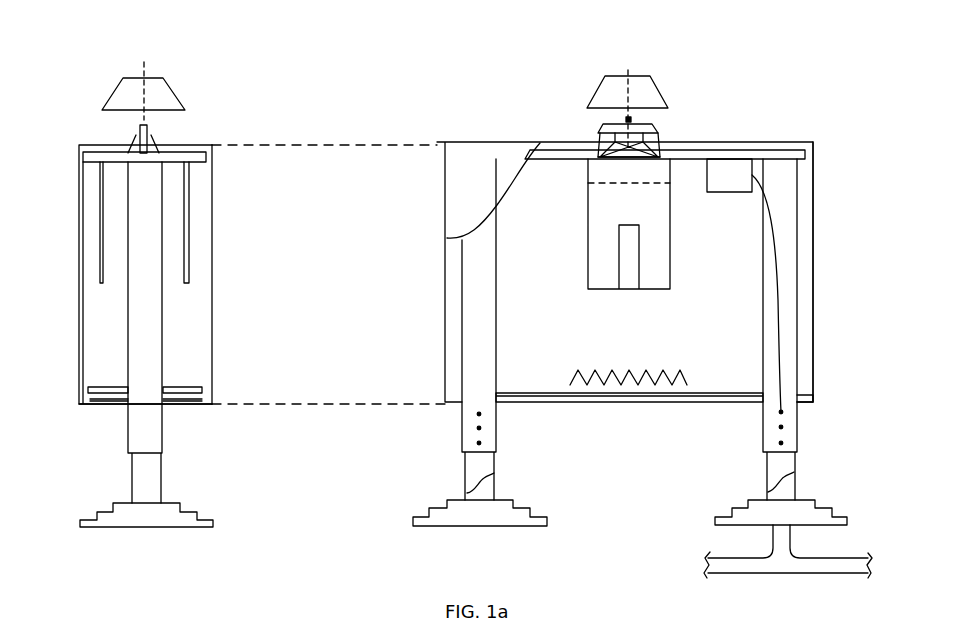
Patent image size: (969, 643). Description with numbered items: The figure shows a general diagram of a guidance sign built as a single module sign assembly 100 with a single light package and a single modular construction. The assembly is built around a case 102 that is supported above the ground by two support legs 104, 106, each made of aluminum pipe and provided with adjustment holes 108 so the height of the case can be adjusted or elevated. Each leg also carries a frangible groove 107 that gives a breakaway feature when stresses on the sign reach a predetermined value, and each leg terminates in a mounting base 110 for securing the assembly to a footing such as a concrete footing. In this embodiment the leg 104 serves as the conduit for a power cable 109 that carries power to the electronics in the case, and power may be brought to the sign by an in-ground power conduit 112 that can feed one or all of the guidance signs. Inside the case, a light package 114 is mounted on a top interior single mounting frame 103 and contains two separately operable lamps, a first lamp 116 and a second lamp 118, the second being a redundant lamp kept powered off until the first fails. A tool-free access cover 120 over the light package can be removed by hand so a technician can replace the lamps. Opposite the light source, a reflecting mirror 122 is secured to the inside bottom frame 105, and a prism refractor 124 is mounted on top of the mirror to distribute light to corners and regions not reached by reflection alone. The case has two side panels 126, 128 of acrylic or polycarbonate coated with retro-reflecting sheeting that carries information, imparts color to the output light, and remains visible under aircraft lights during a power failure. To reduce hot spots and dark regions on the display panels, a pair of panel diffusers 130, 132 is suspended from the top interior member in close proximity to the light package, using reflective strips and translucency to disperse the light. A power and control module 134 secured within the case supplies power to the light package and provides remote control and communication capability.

The single module sign assembly 100 is at (797, 51).
The case 102 is at (813, 273).
The top interior single mounting frame 103 is at (212, 148).
The support leg 104 is at (797, 432).
The inside bottom frame 105 is at (205, 405).
The support leg 106 is at (496, 440).
The frangible groove 107 is at (494, 478).
The adjustment holes 108 is at (475, 428).
The power cable 109 is at (778, 350).
The mounting base 110 is at (547, 520).
The in-ground power conduit 112 is at (795, 575).
The light package 114 is at (662, 124).
The first lamp 116 is at (598, 132).
The second lamp 118 is at (660, 135).
The tool-free access cover 120 is at (170, 90).
The reflecting mirror 122 is at (95, 402).
The prism refractor 124 is at (90, 385).
The side panel 126 is at (212, 180).
The side panel 128 is at (79, 188).
The panel diffuser 130 is at (187, 225).
The panel diffuser 132 is at (97, 222).
The power and control module 134 is at (728, 192).